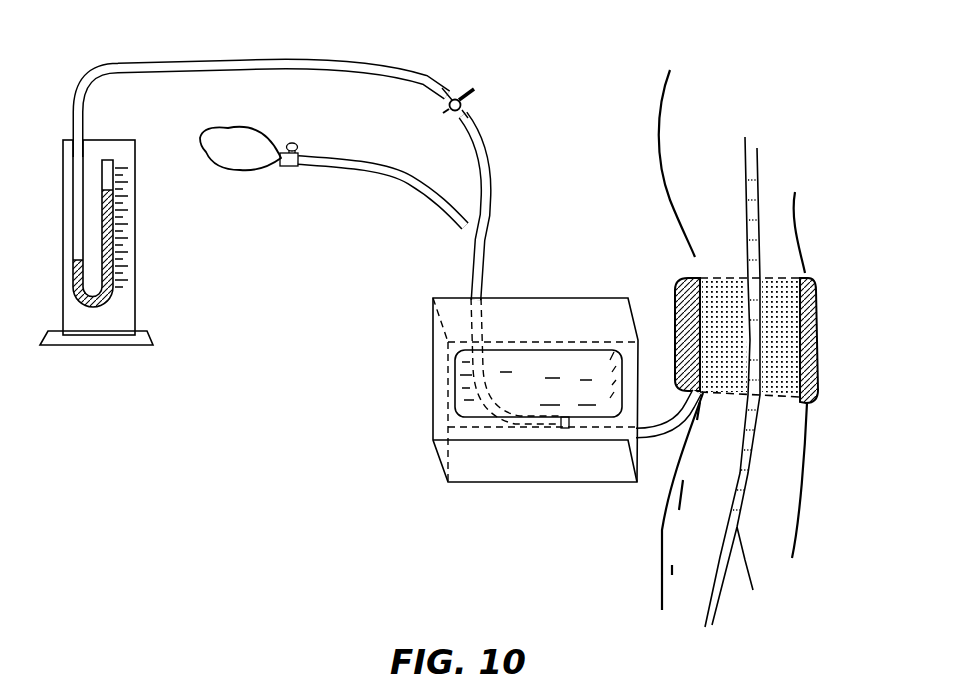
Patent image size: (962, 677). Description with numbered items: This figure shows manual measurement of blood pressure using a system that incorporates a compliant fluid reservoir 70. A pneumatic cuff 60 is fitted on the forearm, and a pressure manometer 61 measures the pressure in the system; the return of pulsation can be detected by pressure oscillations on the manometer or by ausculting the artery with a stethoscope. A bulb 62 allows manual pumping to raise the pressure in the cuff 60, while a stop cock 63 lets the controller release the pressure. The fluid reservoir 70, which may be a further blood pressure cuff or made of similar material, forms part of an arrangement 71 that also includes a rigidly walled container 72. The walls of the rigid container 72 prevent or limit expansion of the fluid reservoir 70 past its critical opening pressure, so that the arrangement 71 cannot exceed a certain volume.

The pneumatic cuff 60 is at (680, 290).
The pressure manometer 61 is at (122, 300).
The bulb 62 is at (237, 157).
The stop cock 63 is at (470, 108).
The compliant fluid reservoir 70 is at (521, 407).
The arrangement 71 is at (399, 429).
The rigidly walled container 72 is at (457, 462).